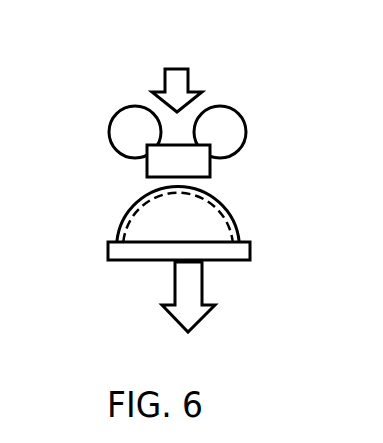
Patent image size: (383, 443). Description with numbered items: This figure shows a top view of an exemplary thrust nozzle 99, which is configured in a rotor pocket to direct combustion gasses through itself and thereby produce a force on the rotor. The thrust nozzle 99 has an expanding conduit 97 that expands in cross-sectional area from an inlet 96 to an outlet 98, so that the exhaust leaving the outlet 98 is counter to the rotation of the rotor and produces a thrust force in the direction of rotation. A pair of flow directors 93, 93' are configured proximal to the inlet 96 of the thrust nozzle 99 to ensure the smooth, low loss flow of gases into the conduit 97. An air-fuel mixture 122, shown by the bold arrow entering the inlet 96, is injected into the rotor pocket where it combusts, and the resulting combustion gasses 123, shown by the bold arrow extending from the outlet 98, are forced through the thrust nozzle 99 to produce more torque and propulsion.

The flow director 93 is at (96, 110).
The flow director 93' is at (242, 107).
The inlet 96 is at (178, 152).
The expanding conduit 97 is at (158, 218).
The thrust nozzle 99 is at (190, 206).
The outlet 98 is at (168, 264).
The air-fuel mixture 122 is at (175, 85).
The combustion gasses 123 is at (187, 294).